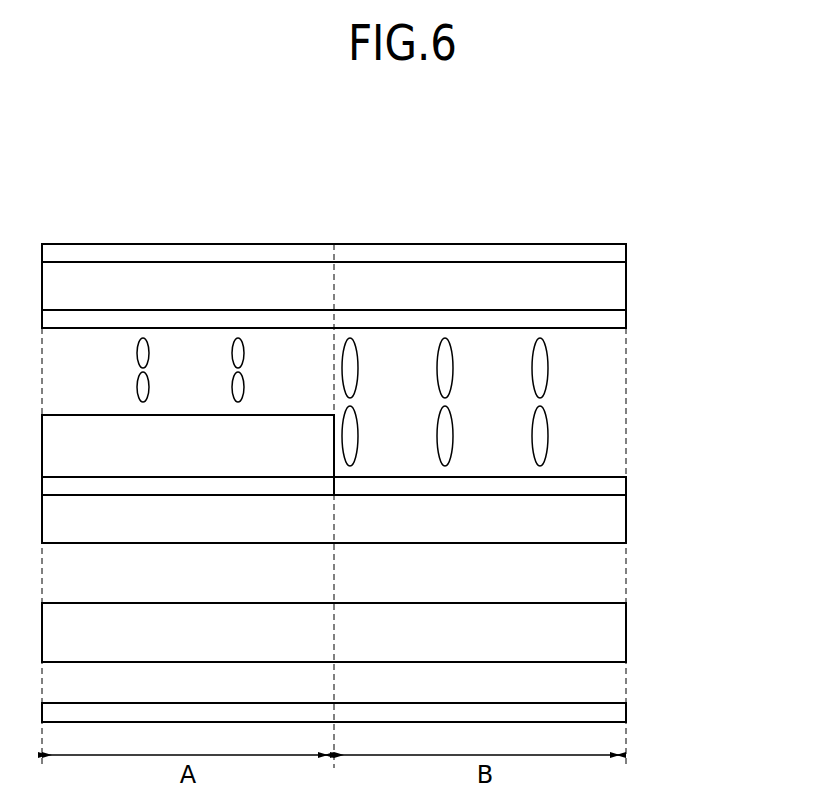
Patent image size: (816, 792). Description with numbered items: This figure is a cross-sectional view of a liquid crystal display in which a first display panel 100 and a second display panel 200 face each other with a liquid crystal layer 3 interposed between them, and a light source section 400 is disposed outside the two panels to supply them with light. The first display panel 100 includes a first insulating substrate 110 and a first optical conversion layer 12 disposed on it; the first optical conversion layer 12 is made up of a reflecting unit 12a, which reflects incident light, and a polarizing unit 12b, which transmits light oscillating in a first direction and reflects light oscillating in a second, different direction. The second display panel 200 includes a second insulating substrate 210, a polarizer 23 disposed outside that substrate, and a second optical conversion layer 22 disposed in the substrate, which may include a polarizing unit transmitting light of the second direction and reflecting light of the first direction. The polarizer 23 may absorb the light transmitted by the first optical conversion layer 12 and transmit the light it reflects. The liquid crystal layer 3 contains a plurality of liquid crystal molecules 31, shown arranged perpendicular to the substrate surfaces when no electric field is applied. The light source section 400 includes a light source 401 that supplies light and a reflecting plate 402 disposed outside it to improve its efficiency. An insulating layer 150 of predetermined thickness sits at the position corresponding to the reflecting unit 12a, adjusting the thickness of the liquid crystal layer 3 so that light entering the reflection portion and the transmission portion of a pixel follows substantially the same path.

The polarizer 23 is at (614, 254).
The second insulating substrate 210 is at (614, 286).
The second optical conversion layer 22 is at (614, 319).
The second display panel 200 is at (395, 286).
The liquid crystal layer 3 is at (389, 411).
The liquid crystal molecules 31 is at (540, 368).
The insulating layer 150 is at (76, 427).
The reflecting unit 12a is at (283, 487).
The polarizing unit 12b is at (587, 487).
The first optical conversion layer 12 is at (364, 431).
The first insulating substrate 110 is at (613, 518).
The first display panel 100 is at (395, 454).
The light source 401 is at (613, 632).
The reflecting plate 402 is at (364, 712).
The light source section 400 is at (394, 664).